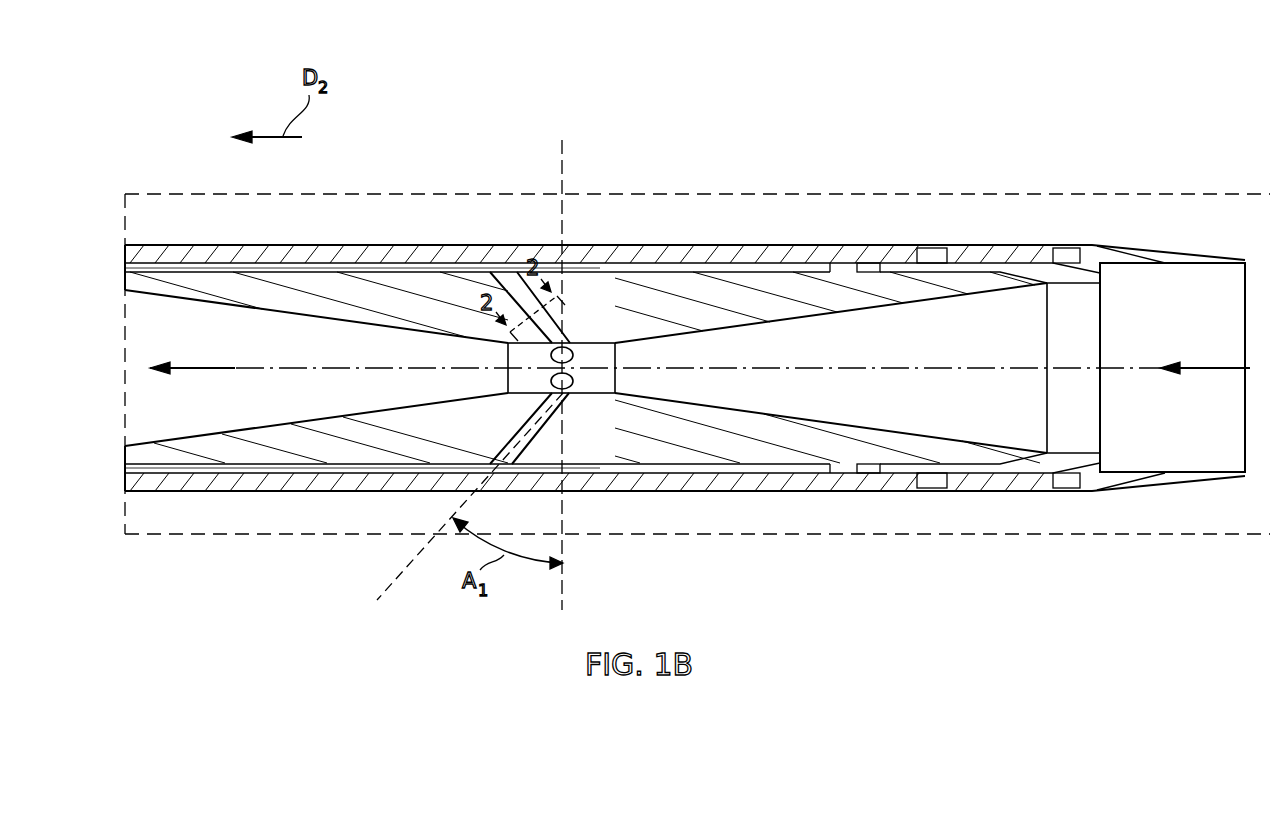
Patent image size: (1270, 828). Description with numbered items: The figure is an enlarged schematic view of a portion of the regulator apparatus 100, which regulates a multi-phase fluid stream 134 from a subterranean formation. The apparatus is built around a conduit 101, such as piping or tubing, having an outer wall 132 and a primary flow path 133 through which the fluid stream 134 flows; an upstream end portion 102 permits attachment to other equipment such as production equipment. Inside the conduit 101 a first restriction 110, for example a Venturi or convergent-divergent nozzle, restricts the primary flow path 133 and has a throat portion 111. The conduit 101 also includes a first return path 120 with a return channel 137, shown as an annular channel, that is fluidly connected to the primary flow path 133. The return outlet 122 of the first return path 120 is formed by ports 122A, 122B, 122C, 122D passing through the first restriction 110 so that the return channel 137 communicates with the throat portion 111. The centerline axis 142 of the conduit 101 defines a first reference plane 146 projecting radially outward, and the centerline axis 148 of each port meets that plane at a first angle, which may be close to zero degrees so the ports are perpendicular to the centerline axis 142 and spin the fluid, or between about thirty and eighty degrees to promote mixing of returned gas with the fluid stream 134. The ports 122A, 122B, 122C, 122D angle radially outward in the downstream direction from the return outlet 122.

The regulator apparatus 100 is at (1162, 132).
The conduit 101 is at (838, 241).
The upstream end portion 102 is at (1172, 250).
The first restriction 110 is at (680, 295).
The throat portion 111 is at (597, 343).
The first return path 120 is at (302, 256).
The return outlet 122 is at (528, 339).
The port 122A is at (532, 442).
The port 122B is at (520, 272).
The port 122C is at (551, 382).
The port 122D is at (551, 355).
The outer wall 132 is at (390, 262).
The primary flow path 133 is at (972, 320).
The fluid stream 134 is at (197, 366).
The return channel 137 is at (176, 268).
The centerline axis 142 is at (907, 366).
The first reference plane 146 is at (560, 598).
The centerline axis 148 is at (400, 563).